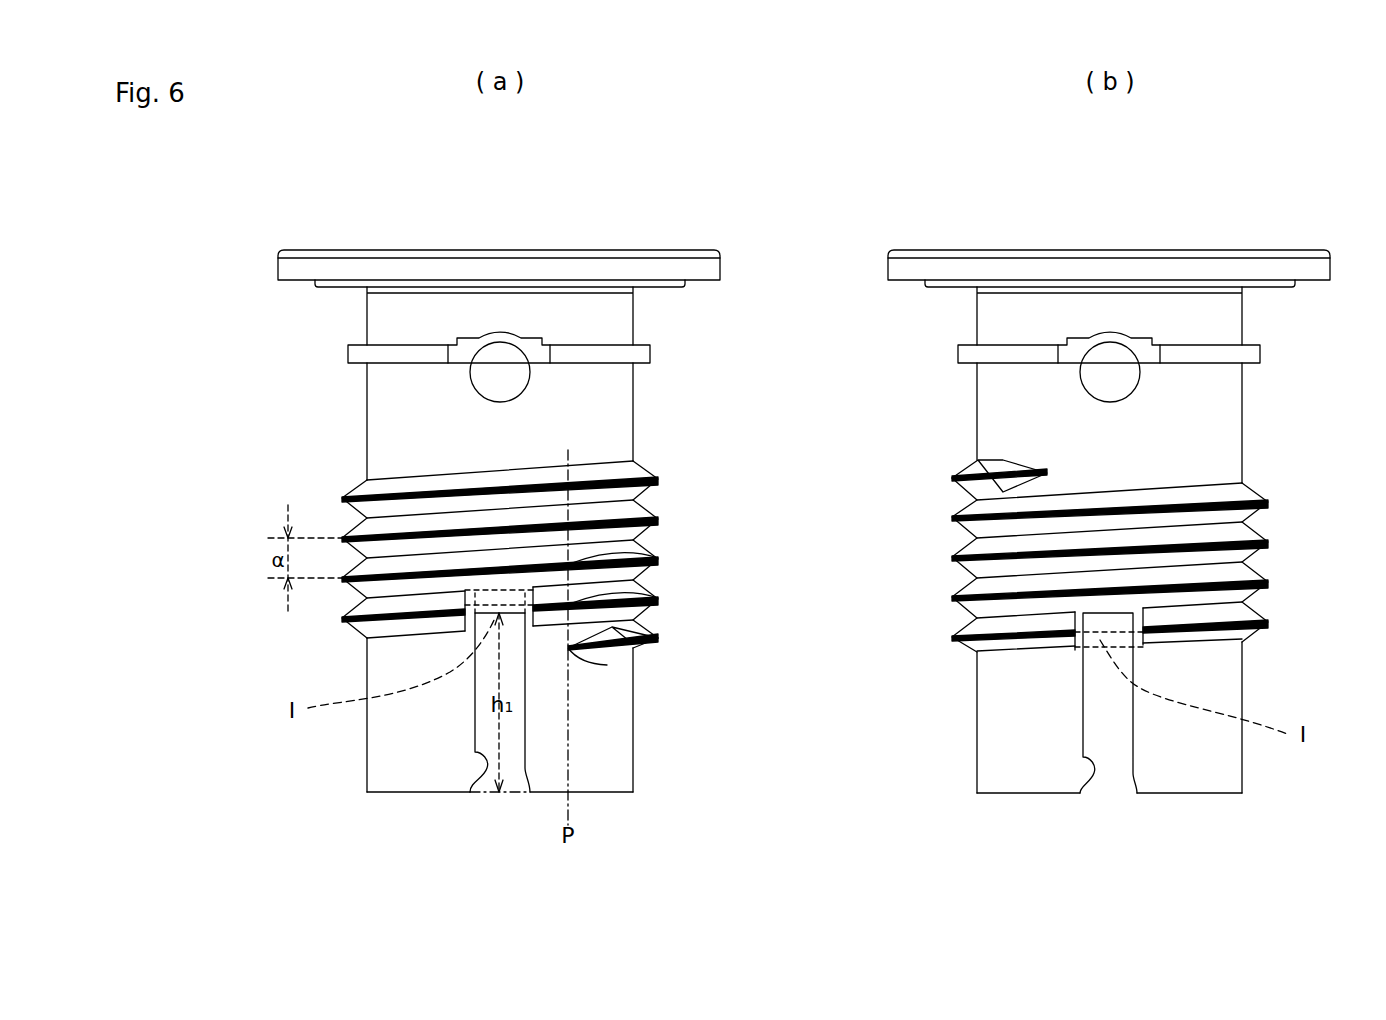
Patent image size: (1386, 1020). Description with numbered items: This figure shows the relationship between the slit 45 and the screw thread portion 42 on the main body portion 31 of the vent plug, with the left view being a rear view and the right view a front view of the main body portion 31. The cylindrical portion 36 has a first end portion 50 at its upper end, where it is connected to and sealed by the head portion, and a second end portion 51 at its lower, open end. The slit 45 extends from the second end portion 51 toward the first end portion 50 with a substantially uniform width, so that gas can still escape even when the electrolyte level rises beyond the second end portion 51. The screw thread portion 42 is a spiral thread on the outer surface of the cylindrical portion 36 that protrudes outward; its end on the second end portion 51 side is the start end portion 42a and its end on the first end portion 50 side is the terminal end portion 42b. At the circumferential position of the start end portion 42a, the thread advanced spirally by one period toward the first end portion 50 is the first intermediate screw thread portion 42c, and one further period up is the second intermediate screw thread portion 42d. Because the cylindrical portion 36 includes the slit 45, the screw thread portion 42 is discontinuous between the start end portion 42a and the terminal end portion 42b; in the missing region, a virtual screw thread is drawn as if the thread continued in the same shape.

The main body portion 31 is at (603, 212).
The first end portion 50 is at (637, 287).
The cylindrical portion 36 is at (633, 413).
The screw thread portion 42 is at (658, 478).
The start end portion 42a is at (607, 665).
The terminal end portion 42b is at (1047, 473).
The first intermediate screw thread portion 42c is at (658, 597).
The second intermediate screw thread portion 42d is at (658, 556).
The slit 45 is at (477, 792).
The second end portion 51 is at (407, 792).